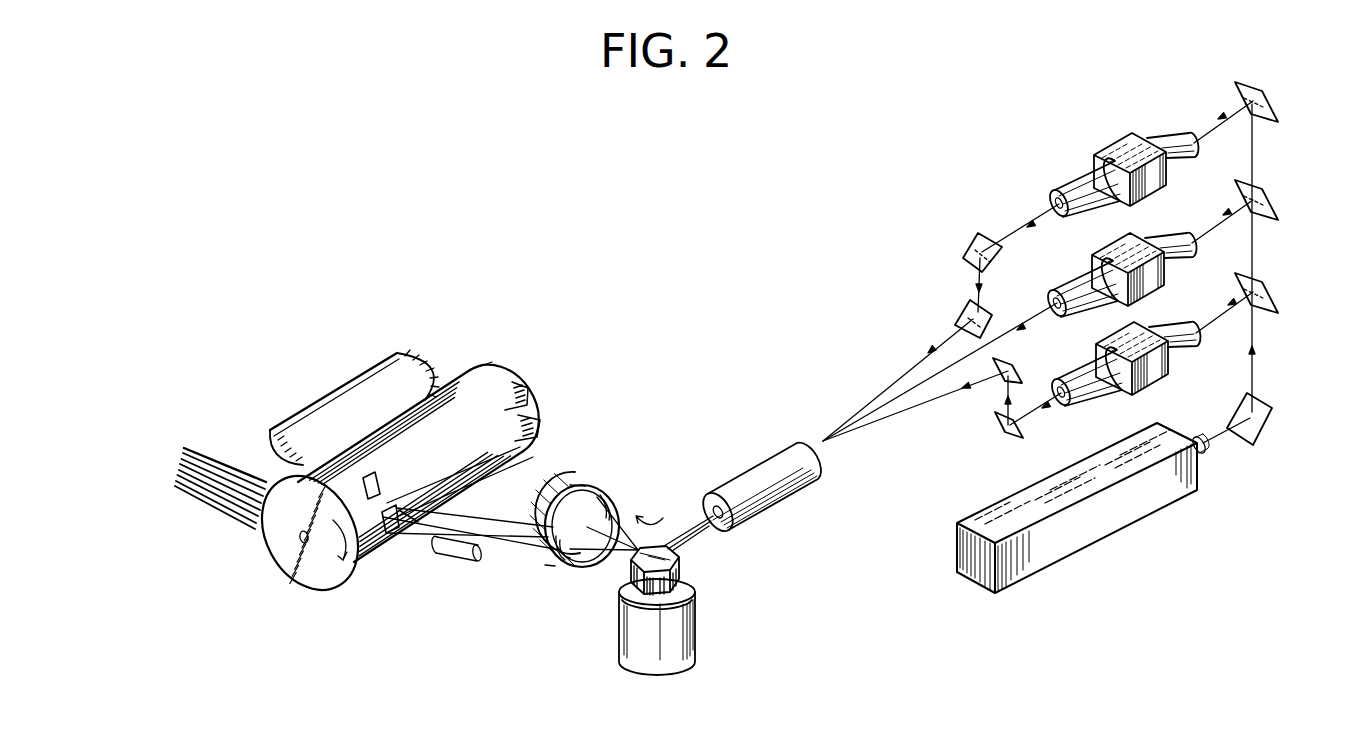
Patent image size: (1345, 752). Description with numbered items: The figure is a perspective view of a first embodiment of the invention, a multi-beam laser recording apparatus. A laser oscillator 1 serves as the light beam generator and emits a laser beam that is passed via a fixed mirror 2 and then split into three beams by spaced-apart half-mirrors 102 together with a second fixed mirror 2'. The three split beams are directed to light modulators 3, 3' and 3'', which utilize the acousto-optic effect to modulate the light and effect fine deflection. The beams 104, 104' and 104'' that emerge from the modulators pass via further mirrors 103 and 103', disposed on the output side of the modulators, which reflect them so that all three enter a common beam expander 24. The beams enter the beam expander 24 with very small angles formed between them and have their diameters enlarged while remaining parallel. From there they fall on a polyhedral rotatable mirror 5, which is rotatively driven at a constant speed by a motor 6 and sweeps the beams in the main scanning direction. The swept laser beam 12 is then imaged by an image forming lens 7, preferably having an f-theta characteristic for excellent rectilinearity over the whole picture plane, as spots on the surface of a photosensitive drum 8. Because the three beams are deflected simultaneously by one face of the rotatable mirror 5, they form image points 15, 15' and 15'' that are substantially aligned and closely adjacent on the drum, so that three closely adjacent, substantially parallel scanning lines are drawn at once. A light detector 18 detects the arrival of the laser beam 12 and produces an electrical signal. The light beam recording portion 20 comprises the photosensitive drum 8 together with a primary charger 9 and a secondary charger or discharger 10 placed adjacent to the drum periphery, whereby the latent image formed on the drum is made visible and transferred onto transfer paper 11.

The laser oscillator 1 is at (1106, 536).
The mirror 2 is at (1256, 275).
The mirror 2' is at (1256, 112).
The light modulator 3 is at (1120, 273).
The light modulator 3' is at (1122, 160).
The light modulator 3'' is at (1124, 364).
The polyhedral rotatable mirror 5 is at (675, 563).
The motor 6 is at (683, 626).
The image forming lens 7 is at (600, 500).
The photosensitive drum 8 is at (500, 385).
The primary charger 9 is at (527, 395).
The secondary charger or discharger 10 is at (540, 431).
The transfer paper 11 is at (416, 384).
The laser beam 12 is at (488, 537).
The image point 15 is at (469, 521).
The image point 15' is at (365, 492).
The image point 15'' is at (426, 556).
The light detector 18 is at (452, 558).
The light beam recording portion 20 is at (489, 328).
The beam expander 24 is at (752, 468).
The half-mirror 102 is at (1275, 200).
The mirror 103 is at (974, 271).
The mirror 103' is at (1049, 399).
The laser beam 104 is at (940, 377).
The laser beam 104' is at (898, 380).
The laser beam 104'' is at (915, 413).